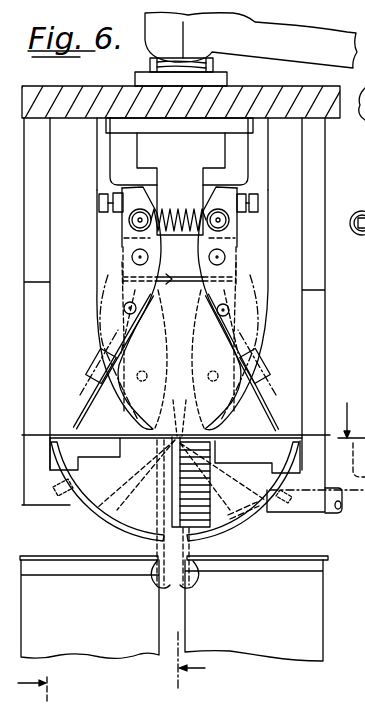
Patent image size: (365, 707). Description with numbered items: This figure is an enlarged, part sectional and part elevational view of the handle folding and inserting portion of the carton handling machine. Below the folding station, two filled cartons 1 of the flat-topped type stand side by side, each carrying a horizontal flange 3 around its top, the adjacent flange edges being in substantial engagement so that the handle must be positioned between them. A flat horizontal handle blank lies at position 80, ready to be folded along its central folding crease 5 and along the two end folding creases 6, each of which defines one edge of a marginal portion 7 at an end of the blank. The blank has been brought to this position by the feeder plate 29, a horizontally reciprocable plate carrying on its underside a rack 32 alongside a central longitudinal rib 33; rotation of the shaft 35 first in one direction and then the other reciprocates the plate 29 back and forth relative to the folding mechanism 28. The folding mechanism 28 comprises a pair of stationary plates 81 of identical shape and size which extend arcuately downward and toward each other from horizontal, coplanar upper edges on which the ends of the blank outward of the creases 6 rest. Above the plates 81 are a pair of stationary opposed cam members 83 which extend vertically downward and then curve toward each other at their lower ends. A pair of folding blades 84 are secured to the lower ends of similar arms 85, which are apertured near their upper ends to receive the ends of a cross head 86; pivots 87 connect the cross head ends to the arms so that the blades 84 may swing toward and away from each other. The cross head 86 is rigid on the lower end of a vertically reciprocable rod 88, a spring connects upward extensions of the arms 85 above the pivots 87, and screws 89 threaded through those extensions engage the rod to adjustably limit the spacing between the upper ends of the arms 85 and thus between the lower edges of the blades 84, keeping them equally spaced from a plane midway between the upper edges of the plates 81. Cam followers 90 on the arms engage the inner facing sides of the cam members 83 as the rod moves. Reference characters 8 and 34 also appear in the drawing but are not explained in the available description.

The filled cartons 1 is at (322, 613).
The flange 3 is at (334, 557).
The central folding crease 5 is at (173, 430).
The folding creases 6 is at (75, 436).
The marginal portion 7 is at (186, 37).
The section line 8- 8 is at (351, 344).
The folding mechanism 28 is at (298, 178).
The feeder plate 29 is at (94, 450).
The rack 32 is at (203, 453).
The rib 33 is at (187, 459).
The rack 34 is at (207, 535).
The shaft 35 is at (330, 514).
The blank position 80 is at (100, 431).
The stationary plates 81 is at (118, 530).
The cam members 83 is at (97, 315).
The folding blades 84 is at (88, 405).
The arms 85 is at (122, 274).
The cross head 86 is at (167, 281).
The pivots 87 is at (132, 256).
The vertically reciprocable rod 88 is at (157, 175).
The screws 89 is at (99, 202).
The cam followers 90 is at (250, 306).